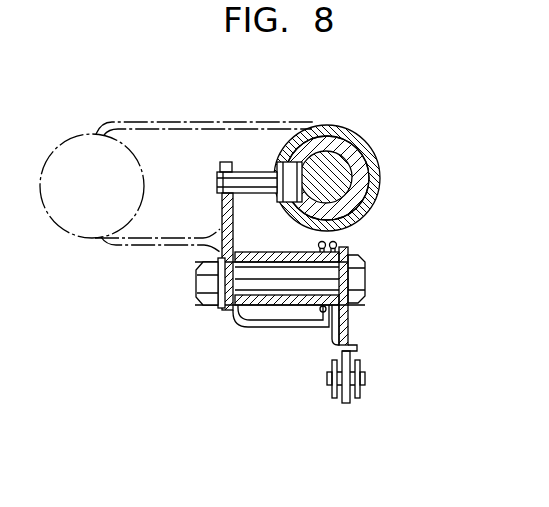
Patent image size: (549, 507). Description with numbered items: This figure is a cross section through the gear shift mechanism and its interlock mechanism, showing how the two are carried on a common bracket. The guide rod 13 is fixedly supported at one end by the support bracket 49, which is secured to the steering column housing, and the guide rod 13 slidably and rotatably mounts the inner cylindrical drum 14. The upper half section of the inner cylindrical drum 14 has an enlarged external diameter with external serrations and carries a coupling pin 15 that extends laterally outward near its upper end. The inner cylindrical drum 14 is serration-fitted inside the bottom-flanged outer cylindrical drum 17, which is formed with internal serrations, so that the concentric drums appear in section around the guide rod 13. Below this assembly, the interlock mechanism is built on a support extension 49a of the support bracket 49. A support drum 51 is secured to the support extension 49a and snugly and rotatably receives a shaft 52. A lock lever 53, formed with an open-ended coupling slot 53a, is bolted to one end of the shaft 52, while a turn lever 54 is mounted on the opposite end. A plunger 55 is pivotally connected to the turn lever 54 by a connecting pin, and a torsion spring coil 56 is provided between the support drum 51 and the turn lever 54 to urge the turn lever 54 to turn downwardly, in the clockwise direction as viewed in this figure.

The guide rod 13 is at (352, 175).
The inner cylindrical drum 14 is at (352, 150).
The coupling pin 15 is at (256, 172).
The outer cylindrical drum 17 is at (337, 126).
The support bracket 49 is at (216, 122).
The support extension 49a is at (316, 248).
The support drum 51 is at (262, 313).
The shaft 52 is at (341, 278).
The lock lever 53 is at (212, 246).
The coupling slot 53a is at (224, 162).
The turn lever 54 is at (346, 336).
The plunger 55 is at (361, 391).
The torsion spring coil 56 is at (323, 313).